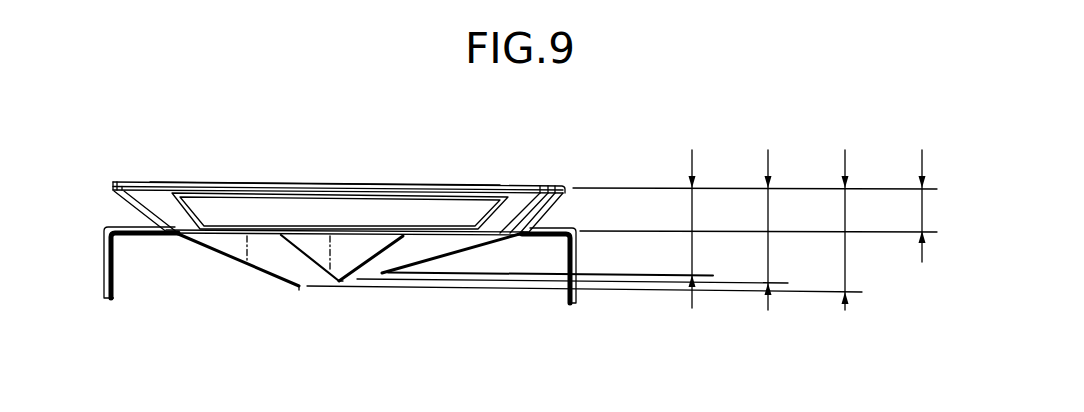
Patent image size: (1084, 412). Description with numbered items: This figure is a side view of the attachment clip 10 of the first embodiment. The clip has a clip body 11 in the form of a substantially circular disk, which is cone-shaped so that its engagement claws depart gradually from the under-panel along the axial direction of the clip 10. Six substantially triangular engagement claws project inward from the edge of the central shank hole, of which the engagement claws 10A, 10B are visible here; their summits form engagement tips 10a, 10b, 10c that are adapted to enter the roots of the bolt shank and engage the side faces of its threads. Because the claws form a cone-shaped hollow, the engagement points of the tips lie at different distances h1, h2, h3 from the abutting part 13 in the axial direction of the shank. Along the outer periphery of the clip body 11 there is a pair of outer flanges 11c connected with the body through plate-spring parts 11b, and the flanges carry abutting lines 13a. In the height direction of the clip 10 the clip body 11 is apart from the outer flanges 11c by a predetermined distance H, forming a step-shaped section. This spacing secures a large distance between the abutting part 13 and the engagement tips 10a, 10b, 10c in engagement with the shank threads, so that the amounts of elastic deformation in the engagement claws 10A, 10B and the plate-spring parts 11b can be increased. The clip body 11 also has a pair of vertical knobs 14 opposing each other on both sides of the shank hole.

The attachment clip 10 is at (545, 165).
The engagement claw 10A is at (440, 242).
The engagement claw 10B is at (348, 252).
The engagement tip 10a is at (383, 275).
The engagement tip 10b is at (340, 283).
The engagement tip 10c is at (237, 245).
The clip body 11 is at (388, 223).
The plate-spring part 11b is at (134, 212).
The outer flange 11c is at (233, 175).
The abutting part 13 is at (472, 186).
The abutting line 13a is at (278, 184).
The vertical knob 14 is at (97, 289).
The distance h1 is at (711, 226).
The distance h2 is at (788, 227).
The distance h3 is at (864, 227).
The predetermined distance H is at (932, 203).